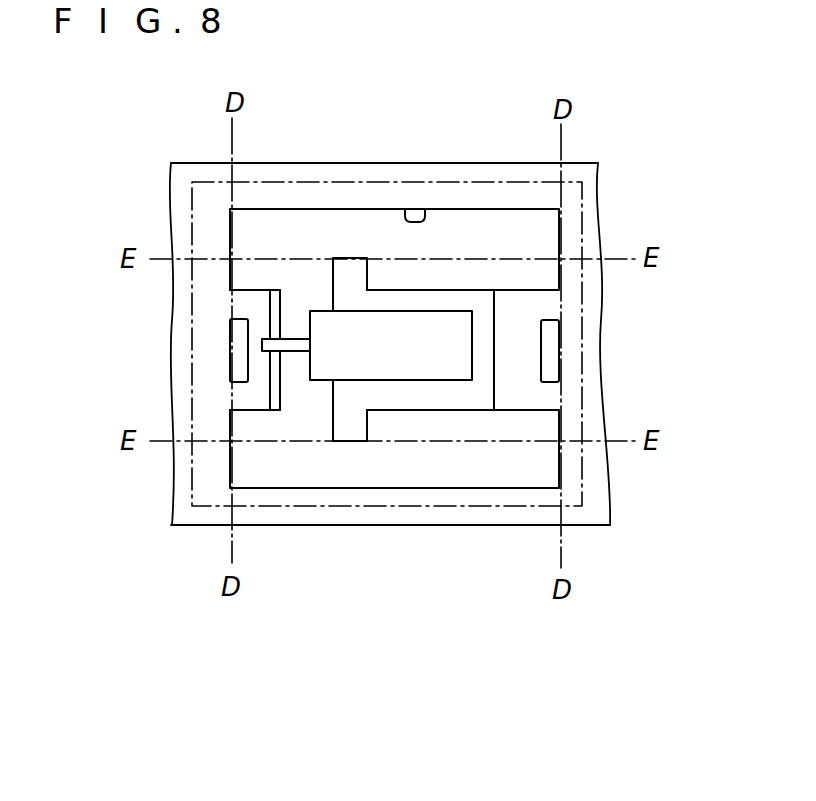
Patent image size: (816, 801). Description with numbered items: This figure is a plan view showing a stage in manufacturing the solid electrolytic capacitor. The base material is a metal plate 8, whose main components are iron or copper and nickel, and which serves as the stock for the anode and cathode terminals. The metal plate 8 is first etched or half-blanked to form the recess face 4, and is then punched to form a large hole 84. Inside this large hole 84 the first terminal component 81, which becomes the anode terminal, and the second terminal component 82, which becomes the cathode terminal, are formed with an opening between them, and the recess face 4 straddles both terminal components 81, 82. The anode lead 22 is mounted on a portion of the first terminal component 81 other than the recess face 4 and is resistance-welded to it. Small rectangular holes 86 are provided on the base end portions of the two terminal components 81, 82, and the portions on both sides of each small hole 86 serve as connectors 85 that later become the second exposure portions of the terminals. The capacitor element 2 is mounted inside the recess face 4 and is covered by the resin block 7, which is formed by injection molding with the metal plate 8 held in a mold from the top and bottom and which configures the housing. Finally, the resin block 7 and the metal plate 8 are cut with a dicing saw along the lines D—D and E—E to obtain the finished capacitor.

The capacitor element 2 is at (410, 358).
The recess face 4 is at (275, 312).
The resin block 7 is at (306, 181).
The metal plate 8 is at (594, 198).
The anode lead 22 is at (297, 358).
The first terminal component 81 is at (254, 288).
The second terminal component 82 is at (352, 266).
The large hole 84 is at (420, 212).
The connector 85 is at (549, 312).
The small rectangular hole 86 is at (242, 362).